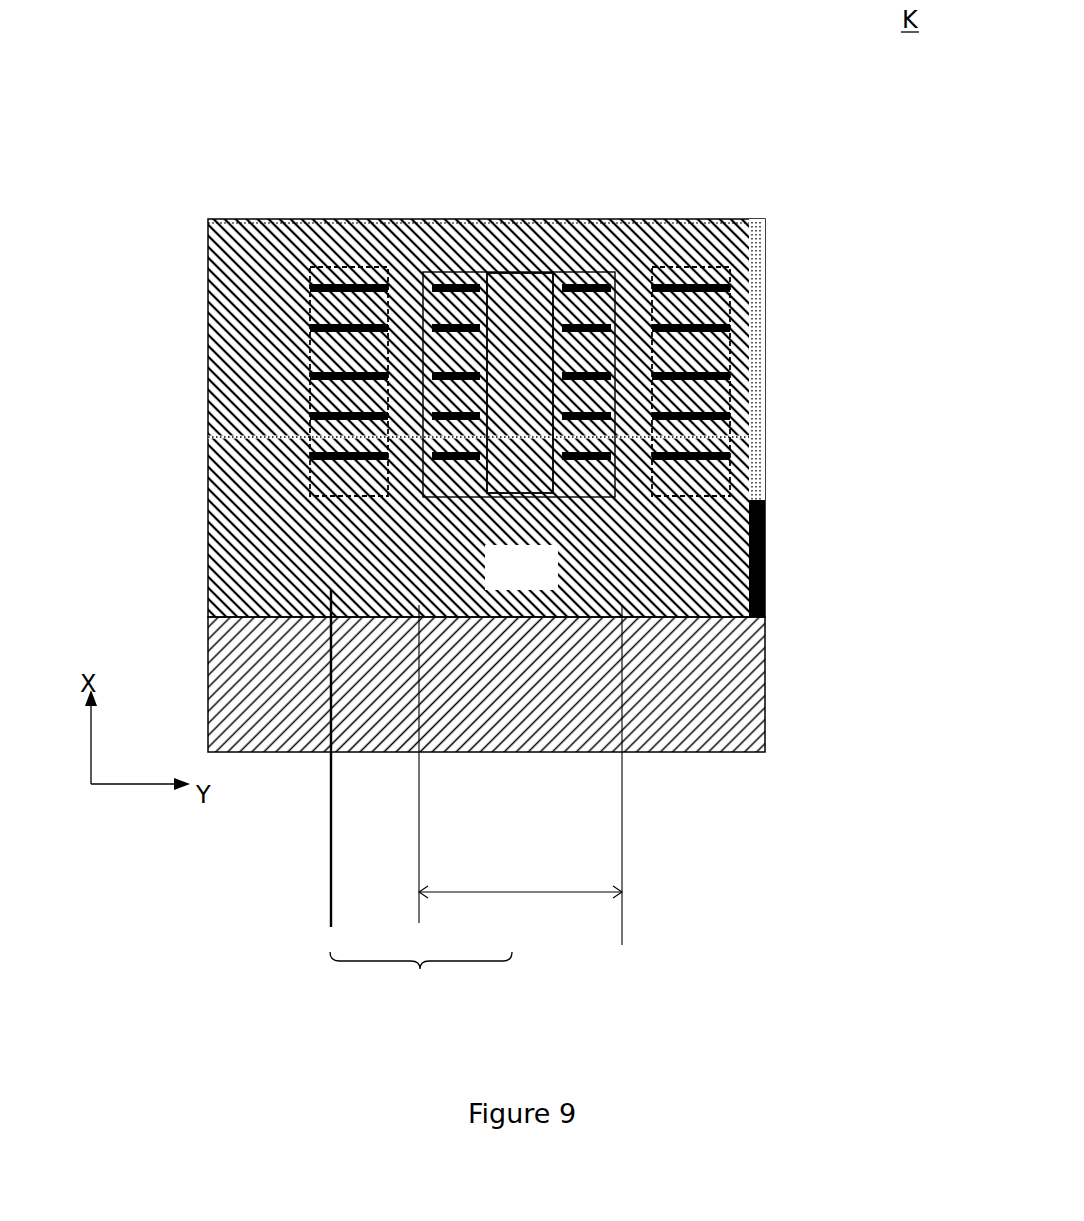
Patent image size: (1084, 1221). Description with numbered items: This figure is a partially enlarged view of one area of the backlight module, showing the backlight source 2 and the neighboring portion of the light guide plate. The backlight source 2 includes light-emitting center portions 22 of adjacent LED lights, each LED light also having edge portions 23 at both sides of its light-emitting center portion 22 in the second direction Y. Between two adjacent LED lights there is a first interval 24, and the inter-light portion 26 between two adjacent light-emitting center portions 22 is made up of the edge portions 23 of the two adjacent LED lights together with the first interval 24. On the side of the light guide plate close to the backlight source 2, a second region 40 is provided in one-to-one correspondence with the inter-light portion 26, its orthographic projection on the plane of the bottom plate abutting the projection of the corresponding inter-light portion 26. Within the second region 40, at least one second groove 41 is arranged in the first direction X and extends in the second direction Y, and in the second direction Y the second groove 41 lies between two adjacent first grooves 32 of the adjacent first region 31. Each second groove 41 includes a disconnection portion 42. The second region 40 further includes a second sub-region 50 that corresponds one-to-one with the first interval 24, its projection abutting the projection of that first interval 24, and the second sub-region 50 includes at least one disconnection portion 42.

The backlight source 2 is at (421, 985).
The light-emitting center portion 22 is at (351, 765).
The edge portion 23 is at (460, 590).
The first interval 24 is at (486, 418).
The inter-light portion 26 is at (520, 780).
The first region 31 is at (728, 307).
The first groove 32 is at (685, 285).
The second region 40 is at (567, 273).
The second groove 41 is at (453, 285).
The disconnection portion 42 is at (520, 383).
The second sub-region 50 is at (517, 275).